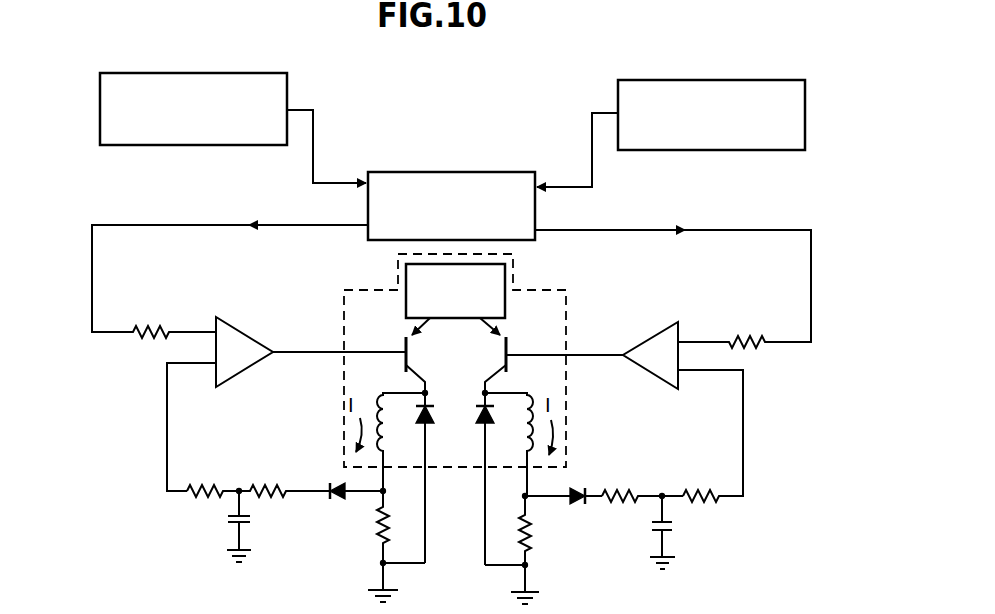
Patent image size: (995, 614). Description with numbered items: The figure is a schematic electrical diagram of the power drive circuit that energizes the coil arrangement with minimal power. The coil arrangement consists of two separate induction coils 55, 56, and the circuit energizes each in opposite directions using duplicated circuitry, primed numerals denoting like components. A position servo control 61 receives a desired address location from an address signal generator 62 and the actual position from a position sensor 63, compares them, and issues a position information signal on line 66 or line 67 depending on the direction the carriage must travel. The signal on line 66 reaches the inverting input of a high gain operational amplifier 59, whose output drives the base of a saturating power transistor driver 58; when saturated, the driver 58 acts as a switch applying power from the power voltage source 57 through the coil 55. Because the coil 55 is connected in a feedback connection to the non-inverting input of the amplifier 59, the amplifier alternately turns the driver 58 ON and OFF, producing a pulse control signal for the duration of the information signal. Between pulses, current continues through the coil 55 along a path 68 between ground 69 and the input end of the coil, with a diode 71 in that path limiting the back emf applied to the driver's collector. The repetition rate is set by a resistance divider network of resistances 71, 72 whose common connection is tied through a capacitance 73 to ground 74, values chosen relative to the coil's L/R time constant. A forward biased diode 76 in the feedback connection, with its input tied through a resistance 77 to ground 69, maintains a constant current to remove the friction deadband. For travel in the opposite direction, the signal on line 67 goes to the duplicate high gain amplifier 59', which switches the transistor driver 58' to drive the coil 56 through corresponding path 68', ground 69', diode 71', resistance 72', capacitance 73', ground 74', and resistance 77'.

The induction coil 55 is at (386, 432).
The induction coil 56 is at (533, 400).
The power voltage source 57 is at (505, 280).
The saturating power transistor driver 58 is at (399, 354).
The transistor driver 58' is at (519, 354).
The high gain operational amplifier 59 is at (311, 344).
The high gain amplifier 59' is at (592, 344).
The position servo control 61 is at (500, 172).
The address signal generator 62 is at (100, 117).
The position sensor 63 is at (805, 131).
The line 66 is at (200, 225).
The line 67 is at (636, 230).
The path 68 is at (426, 537).
The path 68' is at (485, 556).
The ground 69 is at (369, 580).
The ground 69' is at (548, 586).
The diode 71 is at (323, 478).
The diode 71' is at (609, 479).
The resistance 72 is at (284, 474).
The resistance 72' is at (642, 484).
The capacitance 73 is at (262, 520).
The capacitance 73' is at (687, 526).
The ground 74 is at (262, 565).
The ground 74' is at (647, 573).
The forward biased diode 76 is at (340, 500).
The resistance 77 is at (364, 527).
The resistance 77' is at (553, 531).